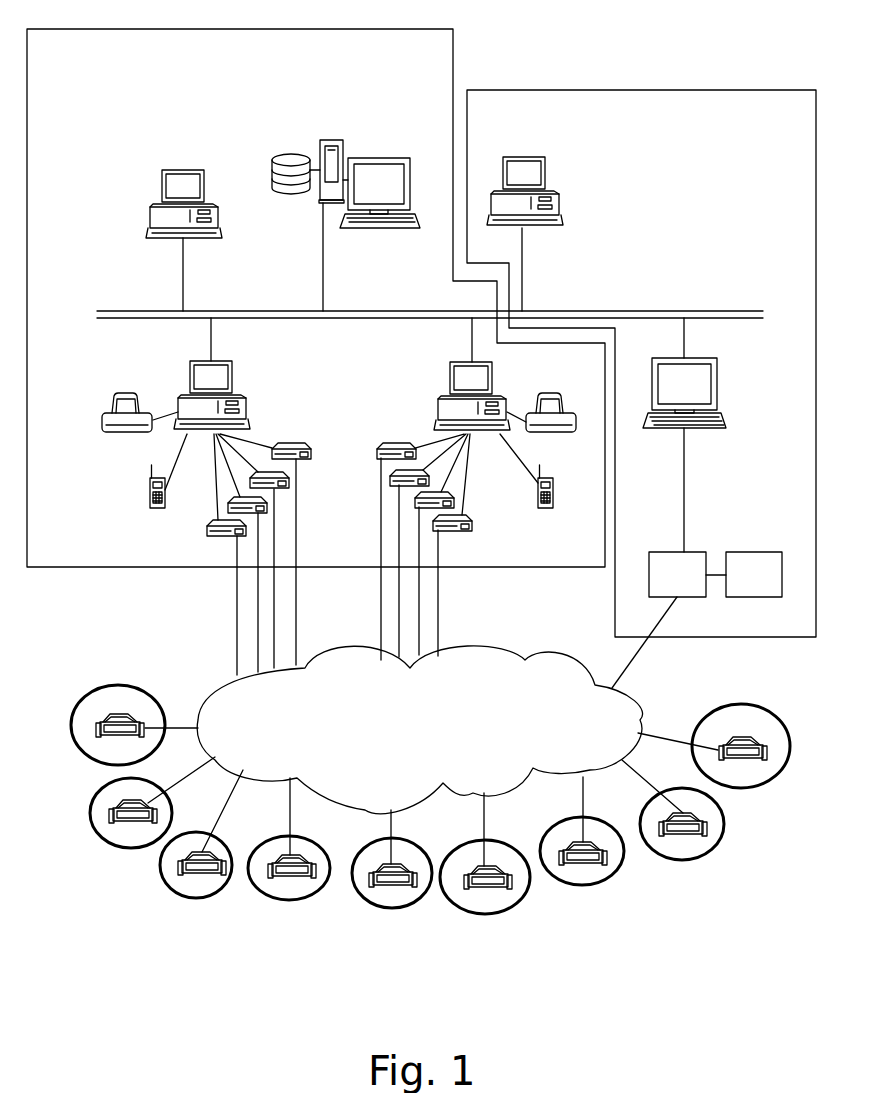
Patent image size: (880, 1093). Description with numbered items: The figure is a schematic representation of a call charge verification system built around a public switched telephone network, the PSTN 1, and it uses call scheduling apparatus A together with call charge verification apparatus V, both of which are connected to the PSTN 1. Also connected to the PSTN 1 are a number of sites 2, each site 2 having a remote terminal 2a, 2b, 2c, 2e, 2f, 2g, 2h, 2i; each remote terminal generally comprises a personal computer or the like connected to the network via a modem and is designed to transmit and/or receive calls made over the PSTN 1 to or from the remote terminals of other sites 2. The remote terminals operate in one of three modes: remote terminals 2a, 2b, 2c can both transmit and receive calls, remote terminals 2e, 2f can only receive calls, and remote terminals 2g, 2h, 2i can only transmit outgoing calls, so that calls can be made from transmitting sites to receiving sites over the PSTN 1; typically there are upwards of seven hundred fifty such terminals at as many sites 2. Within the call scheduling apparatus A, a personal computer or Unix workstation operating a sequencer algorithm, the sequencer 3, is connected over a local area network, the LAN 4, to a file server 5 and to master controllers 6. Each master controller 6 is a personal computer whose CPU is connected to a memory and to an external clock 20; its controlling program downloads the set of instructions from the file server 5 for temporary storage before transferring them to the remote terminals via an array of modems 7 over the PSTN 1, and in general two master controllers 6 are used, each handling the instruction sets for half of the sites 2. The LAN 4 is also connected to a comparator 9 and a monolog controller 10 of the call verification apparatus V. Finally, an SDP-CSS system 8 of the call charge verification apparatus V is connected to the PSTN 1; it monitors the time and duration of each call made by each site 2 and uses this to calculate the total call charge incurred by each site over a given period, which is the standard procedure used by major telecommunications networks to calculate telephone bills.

The call scheduling apparatus A is at (163, 29).
The call charge verification apparatus V is at (590, 90).
The public switched telephone network (PSTN) 1 is at (419, 730).
The site 2 is at (128, 684).
The remote terminal 2a is at (590, 874).
The remote terminal 2b is at (291, 885).
The remote terminal 2c is at (752, 770).
The remote terminal 2e is at (489, 896).
The remote terminal 2f is at (386, 888).
The remote terminal 2g is at (165, 870).
The remote terminal 2h is at (97, 812).
The remote terminal 2i is at (88, 734).
The sequencer 3 is at (135, 211).
The local area network (LAN) 4 is at (262, 311).
The file server 5 is at (406, 152).
The master controller 6 is at (253, 370).
The modems 7 is at (404, 518).
The SDP-CSS system 8 is at (731, 533).
The comparator 9 is at (728, 384).
The monolog controller 10 is at (572, 200).
The external clock 20 is at (148, 505).